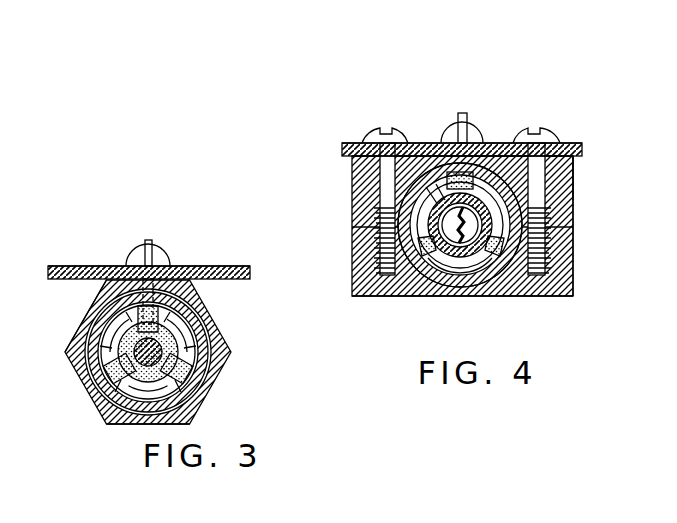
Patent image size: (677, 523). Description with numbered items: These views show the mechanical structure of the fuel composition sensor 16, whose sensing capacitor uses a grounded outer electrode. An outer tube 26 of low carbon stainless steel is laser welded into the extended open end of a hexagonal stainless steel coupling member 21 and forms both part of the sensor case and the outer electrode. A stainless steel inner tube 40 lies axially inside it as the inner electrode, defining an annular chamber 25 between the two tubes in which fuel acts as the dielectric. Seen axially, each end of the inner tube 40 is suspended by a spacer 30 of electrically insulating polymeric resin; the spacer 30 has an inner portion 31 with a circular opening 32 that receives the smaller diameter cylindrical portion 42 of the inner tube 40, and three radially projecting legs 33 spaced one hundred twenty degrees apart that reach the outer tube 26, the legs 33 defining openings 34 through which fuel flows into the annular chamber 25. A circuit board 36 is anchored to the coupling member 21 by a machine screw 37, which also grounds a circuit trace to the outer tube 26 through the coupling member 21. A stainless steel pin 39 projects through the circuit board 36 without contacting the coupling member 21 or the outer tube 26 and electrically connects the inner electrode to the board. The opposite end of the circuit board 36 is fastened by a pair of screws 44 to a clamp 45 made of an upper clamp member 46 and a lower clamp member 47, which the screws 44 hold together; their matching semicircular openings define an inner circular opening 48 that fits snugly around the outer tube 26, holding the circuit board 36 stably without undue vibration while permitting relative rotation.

In FIG. 3, the sensor 16 is at (181, 249).
In FIG. 4, the sensor 16 is at (542, 99).
In FIG. 3, the coupling member 21 is at (72, 317).
In FIG. 4, the annular chamber 25 is at (492, 246).
In FIG. 3, the outer tube 26 is at (70, 358).
In FIG. 4, the outer tube 26 is at (352, 181).
In FIG. 3, the spacer 30 is at (192, 329).
In FIG. 3, the inner portion 31 is at (118, 427).
In FIG. 3, the circular opening 32 is at (163, 352).
In FIG. 3, the radially projecting legs 33 is at (196, 292).
In FIG. 4, the radially projecting legs 33 is at (481, 143).
In FIG. 3, the openings 34 is at (96, 304).
In FIG. 4, the openings 34 is at (352, 167).
In FIG. 3, the circuit board 36 is at (54, 266).
In FIG. 4, the circuit board 36 is at (490, 143).
In FIG. 3, the machine screw 37 is at (137, 251).
In FIG. 4, the machine screw 37 is at (448, 135).
In FIG. 3, the pin 39 is at (150, 240).
In FIG. 4, the pin 39 is at (460, 113).
In FIG. 4, the inner tube 40 is at (418, 156).
In FIG. 3, the cylindrical portion 42 is at (102, 376).
In FIG. 4, the screws 44 is at (378, 127).
In FIG. 4, the clamp 45 is at (584, 218).
In FIG. 4, the upper clamp member 46 is at (574, 172).
In FIG. 4, the lower clamp member 47 is at (574, 280).
In FIG. 4, the inner circular opening 48 is at (441, 278).